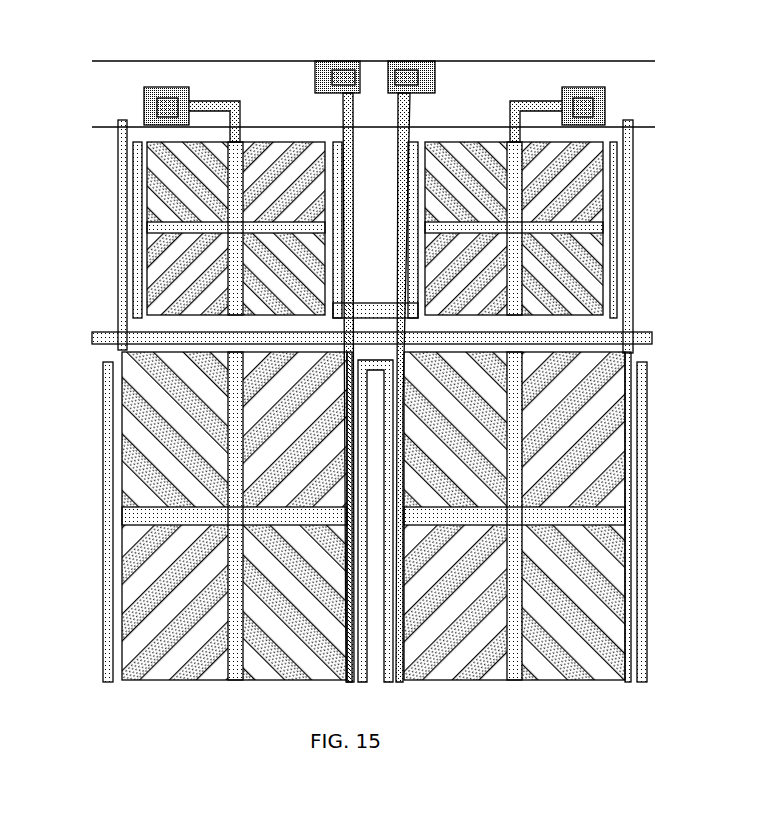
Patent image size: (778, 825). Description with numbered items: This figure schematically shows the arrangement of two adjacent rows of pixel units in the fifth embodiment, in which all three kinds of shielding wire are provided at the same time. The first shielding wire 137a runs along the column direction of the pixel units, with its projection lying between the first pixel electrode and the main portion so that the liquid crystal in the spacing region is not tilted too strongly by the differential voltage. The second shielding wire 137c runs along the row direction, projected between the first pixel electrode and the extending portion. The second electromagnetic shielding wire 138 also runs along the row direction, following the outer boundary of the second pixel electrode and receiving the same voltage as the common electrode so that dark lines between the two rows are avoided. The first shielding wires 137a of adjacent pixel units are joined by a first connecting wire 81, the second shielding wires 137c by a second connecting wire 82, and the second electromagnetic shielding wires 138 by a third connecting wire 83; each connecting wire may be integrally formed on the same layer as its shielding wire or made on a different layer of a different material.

The first connecting wire 81 is at (390, 337).
The second connecting wire 82 is at (363, 313).
The third connecting wire 83 is at (383, 365).
The first shielding wire 137a is at (180, 333).
The second shielding wire 137c is at (345, 195).
The second electromagnetic shielding wire 138 is at (362, 472).